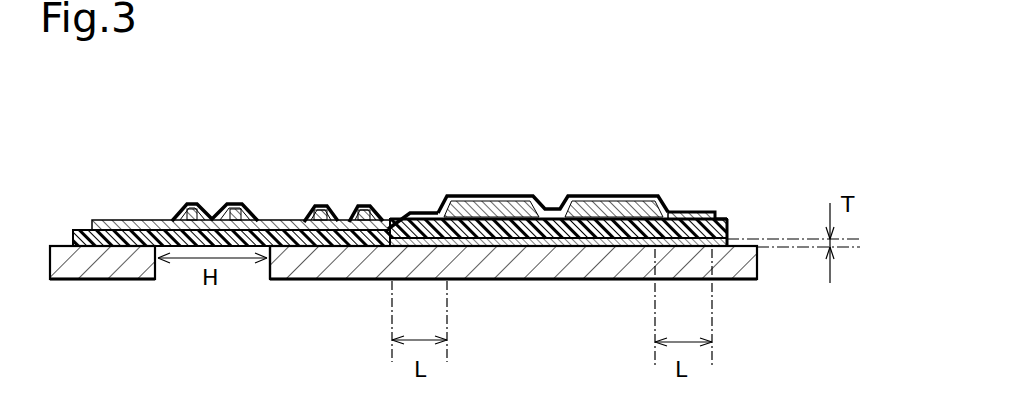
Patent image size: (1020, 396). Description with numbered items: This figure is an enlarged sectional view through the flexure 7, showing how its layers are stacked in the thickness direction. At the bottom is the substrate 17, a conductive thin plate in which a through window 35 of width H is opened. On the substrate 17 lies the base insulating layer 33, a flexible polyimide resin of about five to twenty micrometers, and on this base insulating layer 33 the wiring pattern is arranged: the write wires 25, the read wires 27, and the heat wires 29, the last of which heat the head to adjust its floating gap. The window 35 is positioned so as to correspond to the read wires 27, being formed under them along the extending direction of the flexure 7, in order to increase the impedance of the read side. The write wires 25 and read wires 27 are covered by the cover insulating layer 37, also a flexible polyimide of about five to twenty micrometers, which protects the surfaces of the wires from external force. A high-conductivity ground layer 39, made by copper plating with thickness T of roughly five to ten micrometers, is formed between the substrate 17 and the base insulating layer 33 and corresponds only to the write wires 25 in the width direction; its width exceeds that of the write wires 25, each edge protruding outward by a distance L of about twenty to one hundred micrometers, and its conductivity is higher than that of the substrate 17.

The flexure 7 is at (666, 167).
The substrate 17 is at (340, 279).
The write wires 25 is at (487, 205).
The read wires 27 is at (202, 205).
The heat wires 29 is at (323, 206).
The base insulating layer 33 is at (730, 216).
The window 35 is at (272, 279).
The cover insulating layer 37 is at (418, 213).
The ground layer 39 is at (557, 247).